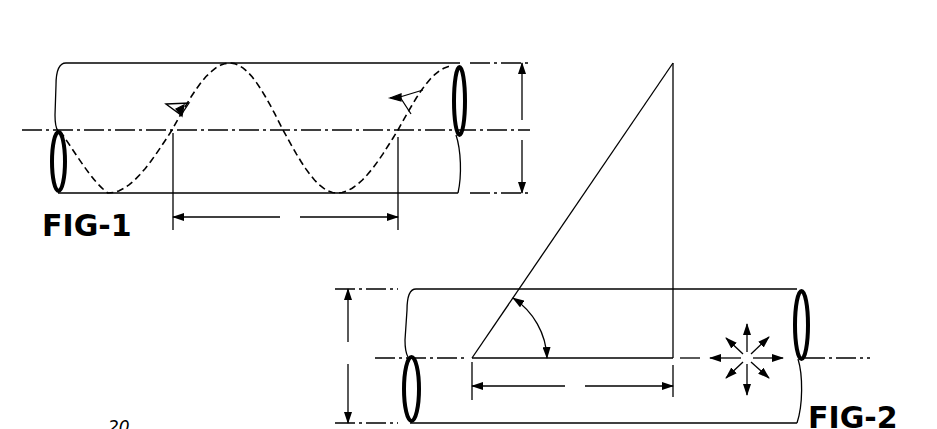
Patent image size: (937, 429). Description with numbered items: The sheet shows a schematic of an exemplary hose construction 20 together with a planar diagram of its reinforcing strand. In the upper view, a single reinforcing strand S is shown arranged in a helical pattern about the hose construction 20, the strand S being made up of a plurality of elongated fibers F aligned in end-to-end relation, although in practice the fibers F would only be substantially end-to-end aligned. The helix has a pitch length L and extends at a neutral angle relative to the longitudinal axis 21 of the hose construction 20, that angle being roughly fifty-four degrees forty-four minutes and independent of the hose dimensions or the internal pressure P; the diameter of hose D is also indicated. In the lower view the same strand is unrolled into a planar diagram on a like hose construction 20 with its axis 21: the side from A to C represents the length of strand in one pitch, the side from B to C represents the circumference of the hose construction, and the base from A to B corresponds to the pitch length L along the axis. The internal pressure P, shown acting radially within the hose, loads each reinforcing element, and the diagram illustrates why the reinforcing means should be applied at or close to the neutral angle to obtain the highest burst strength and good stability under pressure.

In FIG. 1, the hose construction 20 is at (163, 58).
In FIG. 2, the hose construction 20 is at (473, 284).
In FIG. 1, the longitudinal axis 21 is at (33, 130).
In FIG. 2, the longitudinal axis 21 is at (845, 358).
In FIG. 1, the reinforcing strand S is at (145, 161).
In FIG. 1, the fibers F is at (288, 102).
In FIG. 1, the pitch length L is at (285, 181).
In FIG. 2, the pitch length L is at (572, 381).
In FIG. 1, the diameter of hose D is at (500, 128).
In FIG. 2, the diameter of hose D is at (366, 356).
In FIG. 2, the vertex A is at (564, 210).
In FIG. 2, the vertex B is at (580, 347).
In FIG. 2, the vertex C is at (674, 201).
In FIG. 2, the internal pressure P is at (740, 342).